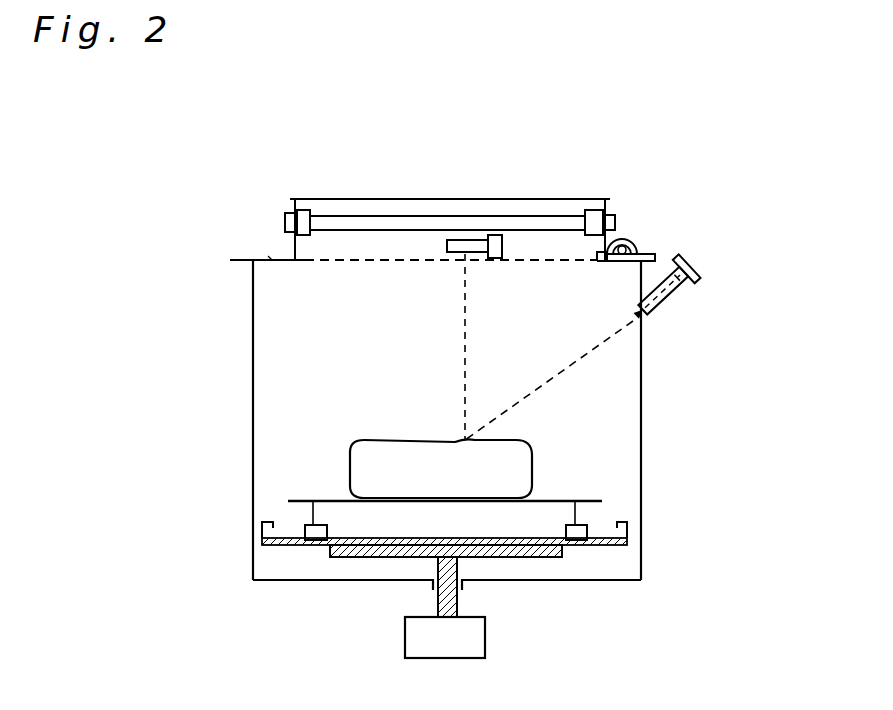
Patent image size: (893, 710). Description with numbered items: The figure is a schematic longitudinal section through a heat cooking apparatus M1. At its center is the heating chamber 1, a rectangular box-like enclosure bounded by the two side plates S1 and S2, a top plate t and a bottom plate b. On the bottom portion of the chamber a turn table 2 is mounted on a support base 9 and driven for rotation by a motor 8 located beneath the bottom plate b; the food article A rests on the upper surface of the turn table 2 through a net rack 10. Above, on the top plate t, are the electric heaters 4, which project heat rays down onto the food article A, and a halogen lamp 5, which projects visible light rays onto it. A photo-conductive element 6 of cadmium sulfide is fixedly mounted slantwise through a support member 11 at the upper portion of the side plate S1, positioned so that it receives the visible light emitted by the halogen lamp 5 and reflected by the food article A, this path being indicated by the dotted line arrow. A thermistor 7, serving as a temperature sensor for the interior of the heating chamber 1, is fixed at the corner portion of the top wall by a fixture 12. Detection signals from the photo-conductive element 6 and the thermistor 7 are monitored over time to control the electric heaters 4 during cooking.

The heat cooking apparatus M1 is at (626, 144).
The heating chamber 1 is at (240, 248).
The top plate t is at (272, 260).
The side plate S2 is at (253, 315).
The side plate S1 is at (641, 412).
The bottom plate b is at (262, 583).
The thermistor 7 is at (655, 250).
The electric heaters 4 is at (530, 222).
The halogen lamp 5 is at (458, 238).
The fixture 12 is at (626, 240).
The photo-conductive element 6 is at (698, 276).
The support member 11 is at (668, 308).
The food article A is at (368, 455).
The net rack 10 is at (328, 498).
The turn table 2 is at (627, 538).
The support base 9 is at (540, 558).
The motor 8 is at (405, 638).